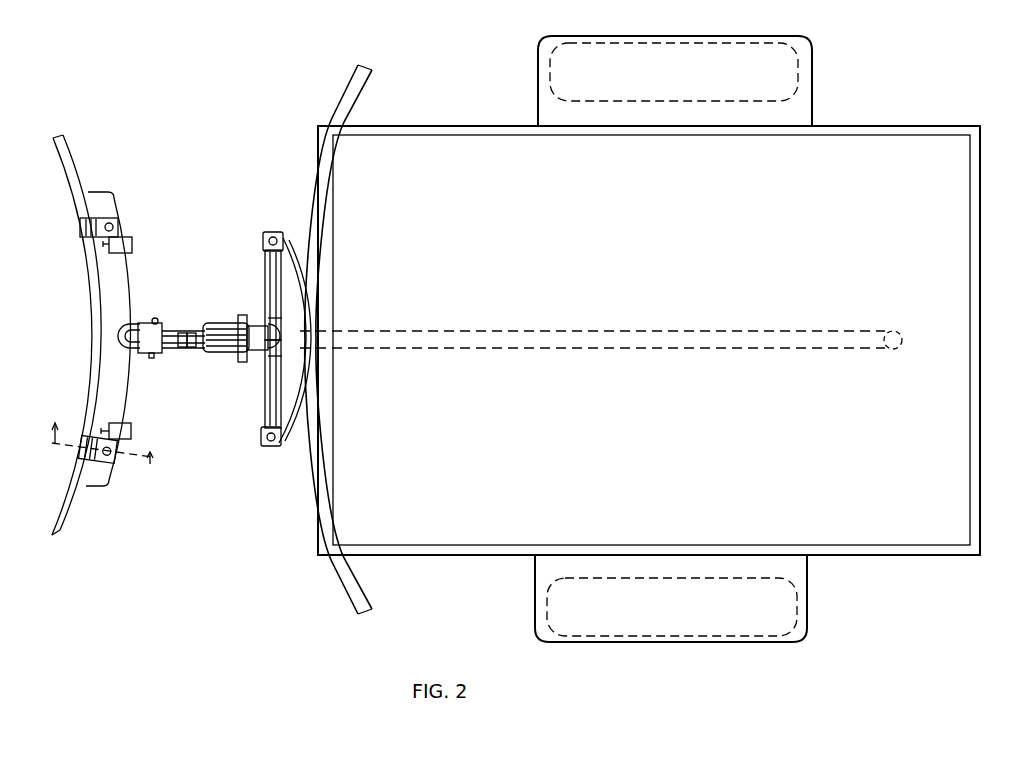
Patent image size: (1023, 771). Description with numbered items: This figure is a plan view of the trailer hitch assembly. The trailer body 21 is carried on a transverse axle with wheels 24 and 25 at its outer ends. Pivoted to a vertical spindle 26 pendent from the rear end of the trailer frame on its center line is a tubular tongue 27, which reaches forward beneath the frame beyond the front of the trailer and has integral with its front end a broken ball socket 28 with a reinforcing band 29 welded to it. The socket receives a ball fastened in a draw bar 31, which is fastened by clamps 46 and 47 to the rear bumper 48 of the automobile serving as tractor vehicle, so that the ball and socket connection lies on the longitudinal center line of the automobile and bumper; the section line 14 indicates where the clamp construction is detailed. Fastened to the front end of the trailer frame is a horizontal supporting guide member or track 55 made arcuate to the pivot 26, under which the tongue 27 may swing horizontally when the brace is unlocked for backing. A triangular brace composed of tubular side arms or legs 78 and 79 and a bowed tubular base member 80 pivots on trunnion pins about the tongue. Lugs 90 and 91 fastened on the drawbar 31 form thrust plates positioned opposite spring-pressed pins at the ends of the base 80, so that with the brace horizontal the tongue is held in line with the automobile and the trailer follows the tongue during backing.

The section line 14 is at (101, 457).
The body 21 is at (945, 437).
The wheel 24 is at (788, 600).
The wheel 25 is at (793, 68).
The vertical spindle 26 is at (900, 336).
The tubular tongue 27 is at (545, 330).
The ball socket 28 is at (130, 318).
The reinforcing band 29 is at (118, 330).
The draw bar 31 is at (123, 383).
The clamp 46 is at (118, 221).
The clamp 47 is at (108, 462).
The rear bumper 48 is at (96, 393).
The supporting guide member 55 is at (312, 478).
The side arm 78 is at (265, 275).
The side arm 79 is at (262, 404).
The tubular base member 80 is at (290, 245).
The lug 90 is at (132, 244).
The lug 91 is at (130, 430).